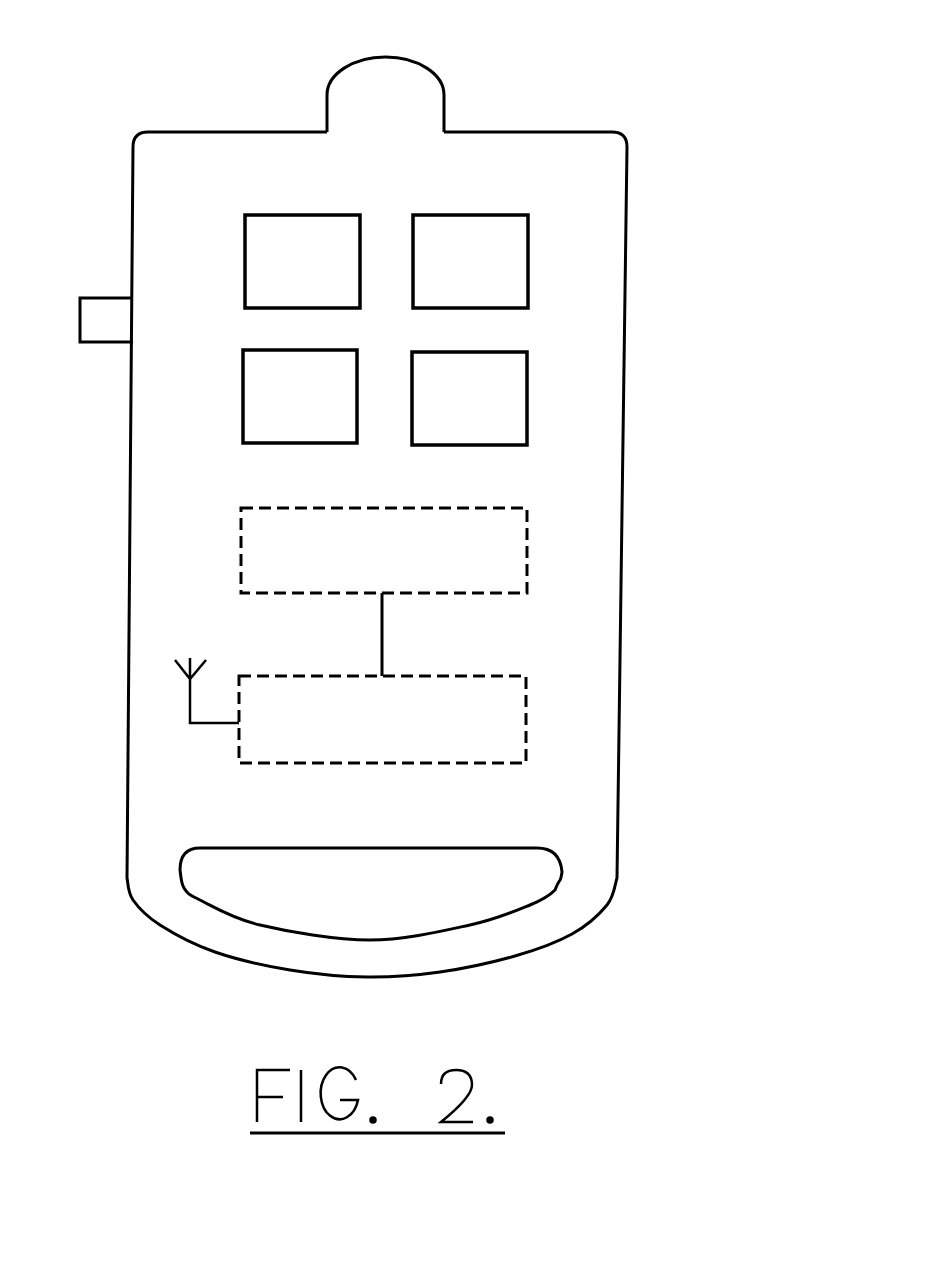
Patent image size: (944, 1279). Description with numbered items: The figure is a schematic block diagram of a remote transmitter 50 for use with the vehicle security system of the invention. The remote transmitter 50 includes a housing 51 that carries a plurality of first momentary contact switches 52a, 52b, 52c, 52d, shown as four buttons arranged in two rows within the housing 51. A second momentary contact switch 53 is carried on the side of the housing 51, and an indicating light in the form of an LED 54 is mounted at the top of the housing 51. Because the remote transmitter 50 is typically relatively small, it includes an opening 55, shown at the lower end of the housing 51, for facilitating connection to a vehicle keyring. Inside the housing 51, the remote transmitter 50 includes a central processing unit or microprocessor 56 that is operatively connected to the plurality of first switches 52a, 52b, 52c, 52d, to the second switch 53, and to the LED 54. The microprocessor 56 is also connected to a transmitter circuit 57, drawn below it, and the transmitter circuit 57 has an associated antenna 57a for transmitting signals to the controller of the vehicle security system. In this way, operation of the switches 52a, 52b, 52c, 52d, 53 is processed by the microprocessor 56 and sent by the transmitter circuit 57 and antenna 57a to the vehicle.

The remote transmitter 50 is at (668, 187).
The housing 51 is at (627, 313).
The first momentary contact switch 52a is at (245, 260).
The first momentary contact switch 52b is at (557, 215).
The first momentary contact switch 52c is at (243, 392).
The first momentary contact switch 52d is at (555, 345).
The second momentary contact switch 53 is at (112, 298).
The LED 54 is at (443, 83).
The opening 55 is at (513, 848).
The microprocessor 56 is at (240, 542).
The transmitter circuit 57 is at (532, 683).
The antenna 57a is at (187, 708).